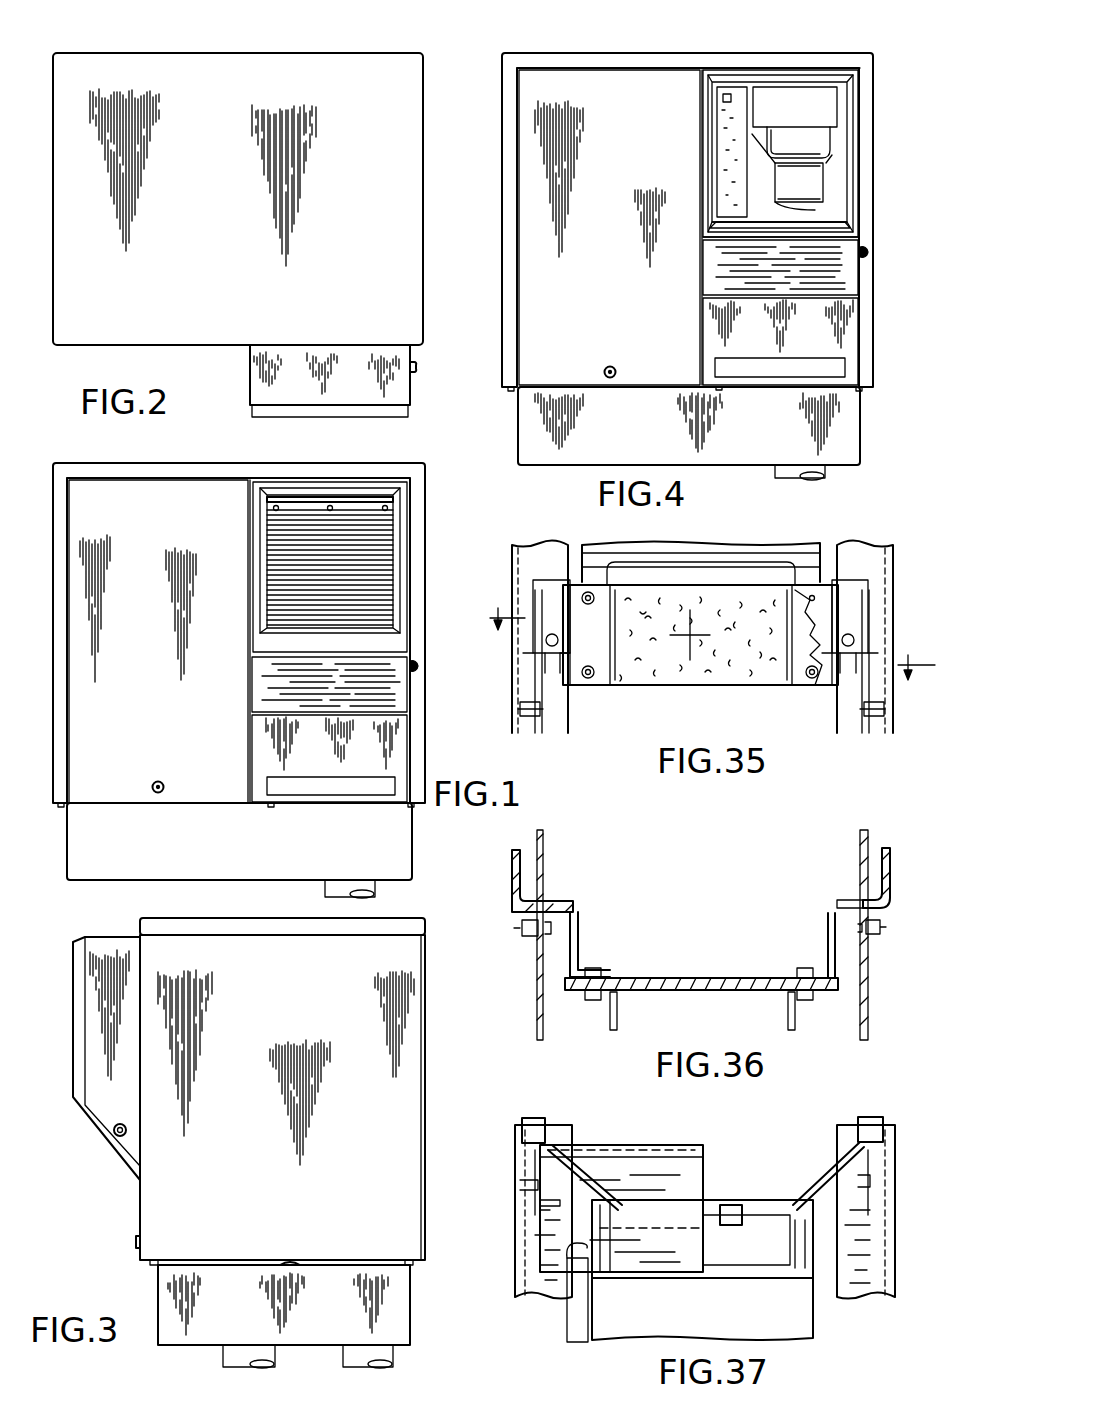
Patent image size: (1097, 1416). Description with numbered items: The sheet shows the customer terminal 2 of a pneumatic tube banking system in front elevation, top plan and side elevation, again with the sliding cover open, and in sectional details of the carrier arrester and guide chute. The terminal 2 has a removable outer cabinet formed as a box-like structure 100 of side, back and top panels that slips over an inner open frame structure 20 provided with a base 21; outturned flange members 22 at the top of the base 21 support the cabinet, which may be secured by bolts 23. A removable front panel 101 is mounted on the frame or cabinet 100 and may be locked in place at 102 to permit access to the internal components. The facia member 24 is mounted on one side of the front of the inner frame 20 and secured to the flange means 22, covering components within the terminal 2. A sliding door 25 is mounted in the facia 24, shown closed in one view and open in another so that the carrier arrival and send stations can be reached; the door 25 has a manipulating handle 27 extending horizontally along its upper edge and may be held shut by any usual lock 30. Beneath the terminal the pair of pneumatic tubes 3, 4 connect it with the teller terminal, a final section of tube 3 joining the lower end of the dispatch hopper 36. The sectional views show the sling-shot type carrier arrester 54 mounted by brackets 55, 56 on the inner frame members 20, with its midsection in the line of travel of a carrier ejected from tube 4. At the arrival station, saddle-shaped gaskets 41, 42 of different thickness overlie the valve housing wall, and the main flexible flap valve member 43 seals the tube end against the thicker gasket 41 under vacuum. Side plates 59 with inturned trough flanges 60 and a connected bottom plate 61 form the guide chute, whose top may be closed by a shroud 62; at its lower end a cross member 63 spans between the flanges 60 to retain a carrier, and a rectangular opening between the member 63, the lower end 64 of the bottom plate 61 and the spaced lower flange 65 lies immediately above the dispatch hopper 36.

In FIG. 2, the customer terminal 2 is at (249, 235).
In FIG. 4, the customer terminal 2 is at (690, 264).
In FIG. 1, the customer terminal 2 is at (239, 673).
In FIG. 3, the customer terminal 2 is at (248, 1160).
In FIG. 4, the pneumatic tube 3 is at (790, 473).
In FIG. 1, the pneumatic tube 3 is at (330, 888).
In FIG. 3, the pneumatic tube 3 is at (235, 1358).
In FIG. 3, the pneumatic tube 4 is at (360, 1358).
In FIG. 35, the inner open frame structure 20 is at (528, 563).
In FIG. 36, the inner open frame structure 20 is at (522, 875).
In FIG. 37, the inner open frame structure 20 is at (530, 1285).
In FIG. 4, the base 21 is at (815, 435).
In FIG. 1, the base 21 is at (135, 860).
In FIG. 3, the base 21 is at (195, 1340).
In FIG. 4, the outturned flange members 22 is at (531, 390).
In FIG. 1, the outturned flange members 22 is at (186, 806).
In FIG. 3, the outturned flange members 22 is at (230, 1268).
In FIG. 4, the bolts 23 is at (718, 389).
In FIG. 1, the bolts 23 is at (270, 806).
In FIG. 3, the bolts 23 is at (300, 1262).
In FIG. 2, the facia member 24 is at (300, 363).
In FIG. 4, the facia member 24 is at (715, 287).
In FIG. 1, the facia member 24 is at (272, 681).
In FIG. 3, the facia member 24 is at (110, 1017).
In FIG. 1, the sliding door 25 is at (295, 555).
In FIG. 4, the manipulating handle 27 is at (823, 230).
In FIG. 1, the manipulating handle 27 is at (300, 500).
In FIG. 2, the lock 30 is at (416, 367).
In FIG. 4, the lock 30 is at (870, 253).
In FIG. 1, the lock 30 is at (420, 664).
In FIG. 3, the lock 30 is at (113, 1134).
In FIG. 35, the dispatch hopper 36 is at (710, 632).
In FIG. 37, the dispatch hopper 36 is at (625, 1320).
In FIG. 4, the saddle-shaped gasket 41 is at (832, 160).
In FIG. 4, the saddle-shaped gasket 42 is at (742, 128).
In FIG. 4, the main flexible flap valve member 43 is at (822, 133).
In FIG. 35, the carrier arrester 54 is at (672, 660).
In FIG. 36, the carrier arrester 54 is at (722, 978).
In FIG. 35, the bracket 55 is at (552, 585).
In FIG. 36, the bracket 55 is at (578, 935).
In FIG. 35, the bracket 56 is at (600, 680).
In FIG. 36, the bracket 56 is at (618, 1015).
In FIG. 4, the side plates 59 is at (838, 97).
In FIG. 37, the side plates 59 is at (540, 1128).
In FIG. 4, the inturned trough flanges 60 is at (835, 180).
In FIG. 37, the inturned trough flanges 60 is at (585, 1175).
In FIG. 4, the bottom plate 61 is at (799, 182).
In FIG. 37, the bottom plate 61 is at (745, 1200).
In FIG. 35, the shroud 62 is at (755, 548).
In FIG. 37, the cross member 63 is at (680, 1170).
In FIG. 4, the lower end of bottom plate 64 is at (815, 207).
In FIG. 37, the lower end of bottom plate 64 is at (708, 1220).
In FIG. 4, the lower flange 65 is at (785, 212).
In FIG. 37, the lower flange 65 is at (790, 1247).
In FIG. 2, the box-like cabinet structure 100 is at (222, 226).
In FIG. 4, the box-like cabinet structure 100 is at (508, 184).
In FIG. 1, the box-like cabinet structure 100 is at (58, 660).
In FIG. 3, the box-like cabinet structure 100 is at (370, 1118).
In FIG. 4, the removable front panel 101 is at (632, 154).
In FIG. 1, the removable front panel 101 is at (153, 528).
In FIG. 4, the lock 102 is at (616, 368).
In FIG. 1, the lock 102 is at (166, 782).
In FIG. 3, the lock 102 is at (135, 1243).